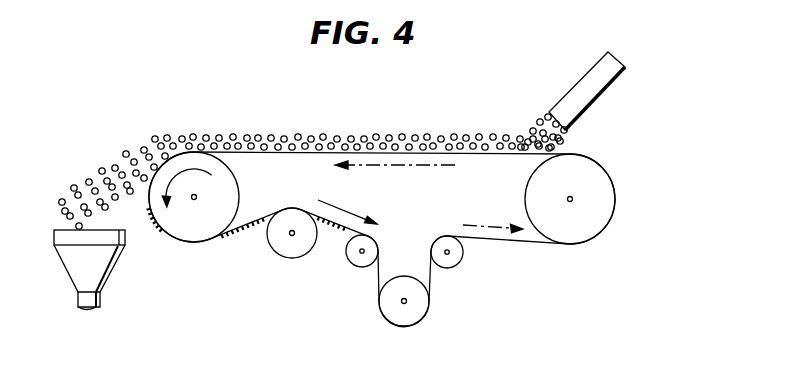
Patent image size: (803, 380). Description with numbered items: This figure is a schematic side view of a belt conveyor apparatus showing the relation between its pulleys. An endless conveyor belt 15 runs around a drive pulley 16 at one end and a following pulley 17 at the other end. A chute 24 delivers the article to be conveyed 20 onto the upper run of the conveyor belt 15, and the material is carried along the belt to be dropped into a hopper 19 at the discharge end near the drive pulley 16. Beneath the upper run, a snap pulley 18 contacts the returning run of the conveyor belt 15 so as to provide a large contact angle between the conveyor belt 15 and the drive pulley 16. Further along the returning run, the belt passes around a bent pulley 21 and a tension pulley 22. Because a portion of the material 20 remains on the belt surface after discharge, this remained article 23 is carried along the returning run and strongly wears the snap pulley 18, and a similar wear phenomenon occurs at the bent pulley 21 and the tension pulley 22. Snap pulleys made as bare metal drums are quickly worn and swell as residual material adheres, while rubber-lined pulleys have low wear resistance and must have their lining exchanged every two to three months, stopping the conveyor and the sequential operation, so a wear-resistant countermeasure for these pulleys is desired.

The conveyor belt 15 is at (300, 152).
The drive pulley 16 is at (205, 243).
The following pulley 17 is at (603, 203).
The snap pulley 18 is at (293, 255).
The hopper 19 is at (103, 263).
The article to be conveyed 20 is at (357, 138).
The bent pulley 21 is at (363, 267).
The tension pulley 22 is at (423, 307).
The remained article on the conveyor 23 is at (155, 231).
The chute 24 is at (587, 93).